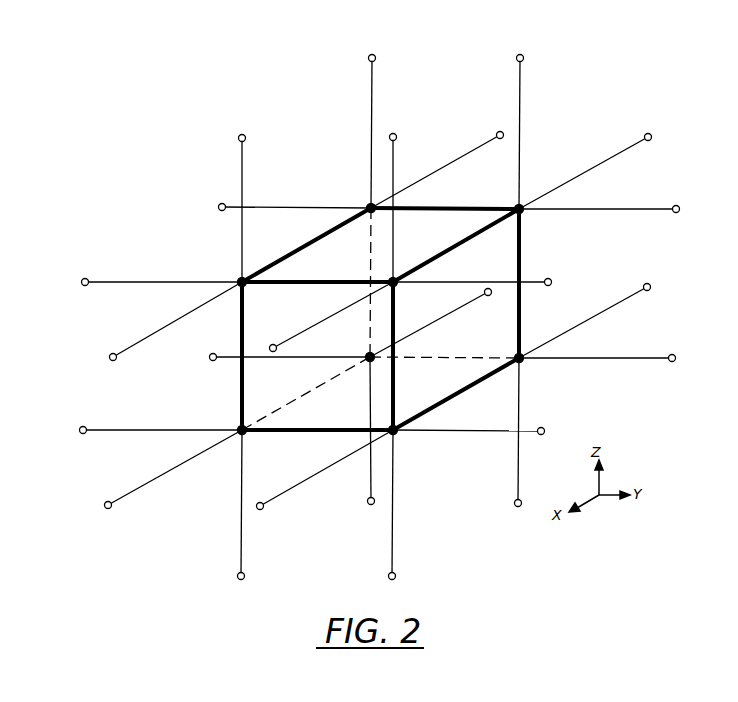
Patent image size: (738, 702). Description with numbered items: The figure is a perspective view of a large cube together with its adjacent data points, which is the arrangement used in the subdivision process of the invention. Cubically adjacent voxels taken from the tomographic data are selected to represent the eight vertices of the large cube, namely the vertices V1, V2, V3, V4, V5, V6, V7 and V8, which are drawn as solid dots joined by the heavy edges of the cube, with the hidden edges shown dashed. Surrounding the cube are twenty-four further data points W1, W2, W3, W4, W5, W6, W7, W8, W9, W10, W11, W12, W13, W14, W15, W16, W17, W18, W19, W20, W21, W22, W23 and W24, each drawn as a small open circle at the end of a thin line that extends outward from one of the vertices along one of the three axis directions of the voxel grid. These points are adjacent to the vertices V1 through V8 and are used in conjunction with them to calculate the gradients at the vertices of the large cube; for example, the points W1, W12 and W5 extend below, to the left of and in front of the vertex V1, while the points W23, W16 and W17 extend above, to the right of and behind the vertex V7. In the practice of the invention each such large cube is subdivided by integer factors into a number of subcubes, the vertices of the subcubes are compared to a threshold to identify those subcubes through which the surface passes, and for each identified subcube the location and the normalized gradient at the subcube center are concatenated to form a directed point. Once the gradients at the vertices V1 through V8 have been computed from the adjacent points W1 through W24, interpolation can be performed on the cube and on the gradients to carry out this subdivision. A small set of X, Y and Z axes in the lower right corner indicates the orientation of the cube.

The vertex of the large cube V1 is at (255, 440).
The vertex of the large cube V2 is at (406, 440).
The vertex of the large cube V3 is at (532, 368).
The vertex of the large cube V4 is at (356, 349).
The vertex of the large cube V5 is at (225, 274).
The vertex of the large cube V6 is at (406, 291).
The vertex of the large cube V7 is at (506, 201).
The vertex of the large cube V8 is at (357, 200).
The adjacent point W1 is at (238, 518).
The adjacent point W2 is at (389, 518).
The adjacent point W3 is at (514, 443).
The adjacent point W4 is at (363, 441).
The adjacent point W5 is at (163, 480).
The adjacent point W6 is at (322, 480).
The adjacent point W7 is at (486, 432).
The adjacent point W8 is at (614, 358).
The adjacent point W9 is at (602, 318).
The adjacent point W10 is at (441, 323).
The adjacent point W11 is at (273, 358).
The adjacent point W12 is at (136, 431).
The adjacent point W13 is at (153, 325).
The adjacent point W14 is at (319, 317).
The adjacent point W15 is at (494, 284).
The adjacent point W16 is at (622, 209).
The adjacent point W17 is at (593, 160).
The adjacent point W18 is at (440, 159).
The adjacent point W19 is at (269, 208).
The adjacent point W20 is at (136, 284).
The adjacent point W21 is at (242, 198).
The adjacent point W22 is at (398, 196).
The adjacent point W23 is at (515, 121).
The adjacent point W24 is at (370, 120).